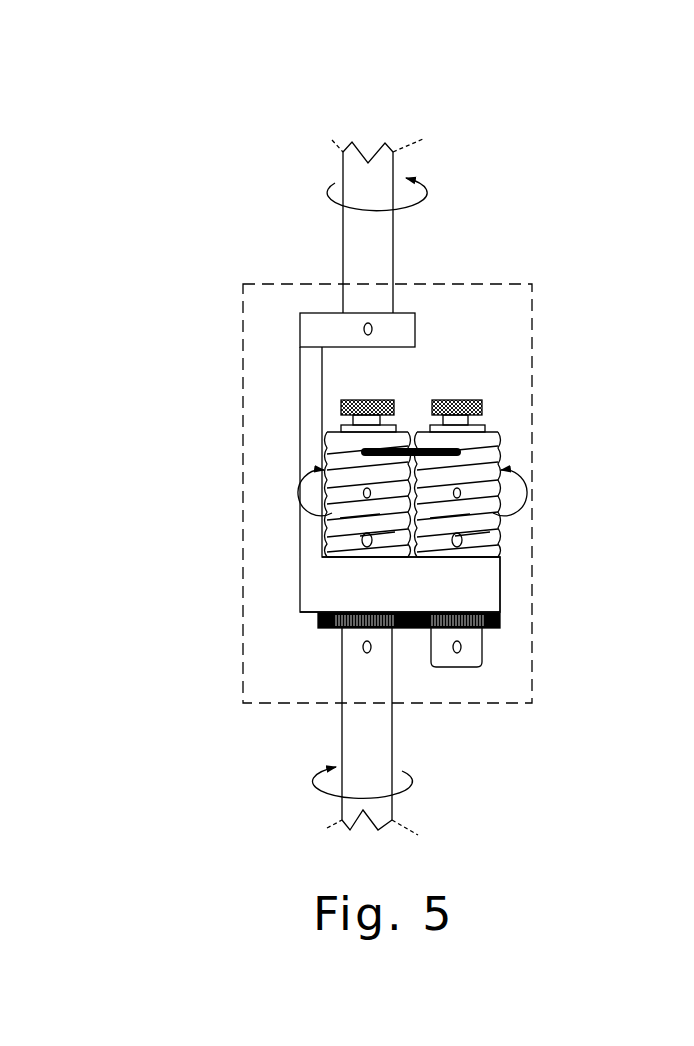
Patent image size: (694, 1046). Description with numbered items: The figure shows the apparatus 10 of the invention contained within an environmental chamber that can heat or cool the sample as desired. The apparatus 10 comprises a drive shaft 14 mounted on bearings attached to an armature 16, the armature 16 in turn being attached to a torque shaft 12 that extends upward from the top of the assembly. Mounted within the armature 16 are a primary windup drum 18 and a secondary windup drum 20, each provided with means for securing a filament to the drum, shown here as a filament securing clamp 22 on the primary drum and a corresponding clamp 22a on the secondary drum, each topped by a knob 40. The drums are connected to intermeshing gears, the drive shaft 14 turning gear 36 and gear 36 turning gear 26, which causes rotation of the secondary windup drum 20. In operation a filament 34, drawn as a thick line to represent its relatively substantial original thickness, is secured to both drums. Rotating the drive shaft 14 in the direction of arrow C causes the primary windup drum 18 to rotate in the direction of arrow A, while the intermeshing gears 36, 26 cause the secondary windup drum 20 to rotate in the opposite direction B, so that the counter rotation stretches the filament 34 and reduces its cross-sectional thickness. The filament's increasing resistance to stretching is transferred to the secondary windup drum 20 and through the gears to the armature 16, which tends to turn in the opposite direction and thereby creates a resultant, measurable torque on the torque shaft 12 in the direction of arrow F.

The apparatus 10 is at (297, 735).
The torque shaft 12 is at (395, 165).
The drive shaft 14 is at (397, 718).
The armature 16 is at (417, 328).
The primary windup drum 18 is at (320, 455).
The secondary windup drum 20 is at (502, 532).
The filament securing clamp 22 is at (340, 422).
The filament securing clamp 22a is at (485, 422).
The gear 26 is at (503, 625).
The filament 34 is at (468, 452).
The gear 36 is at (312, 633).
The knurled knob 40 is at (487, 397).